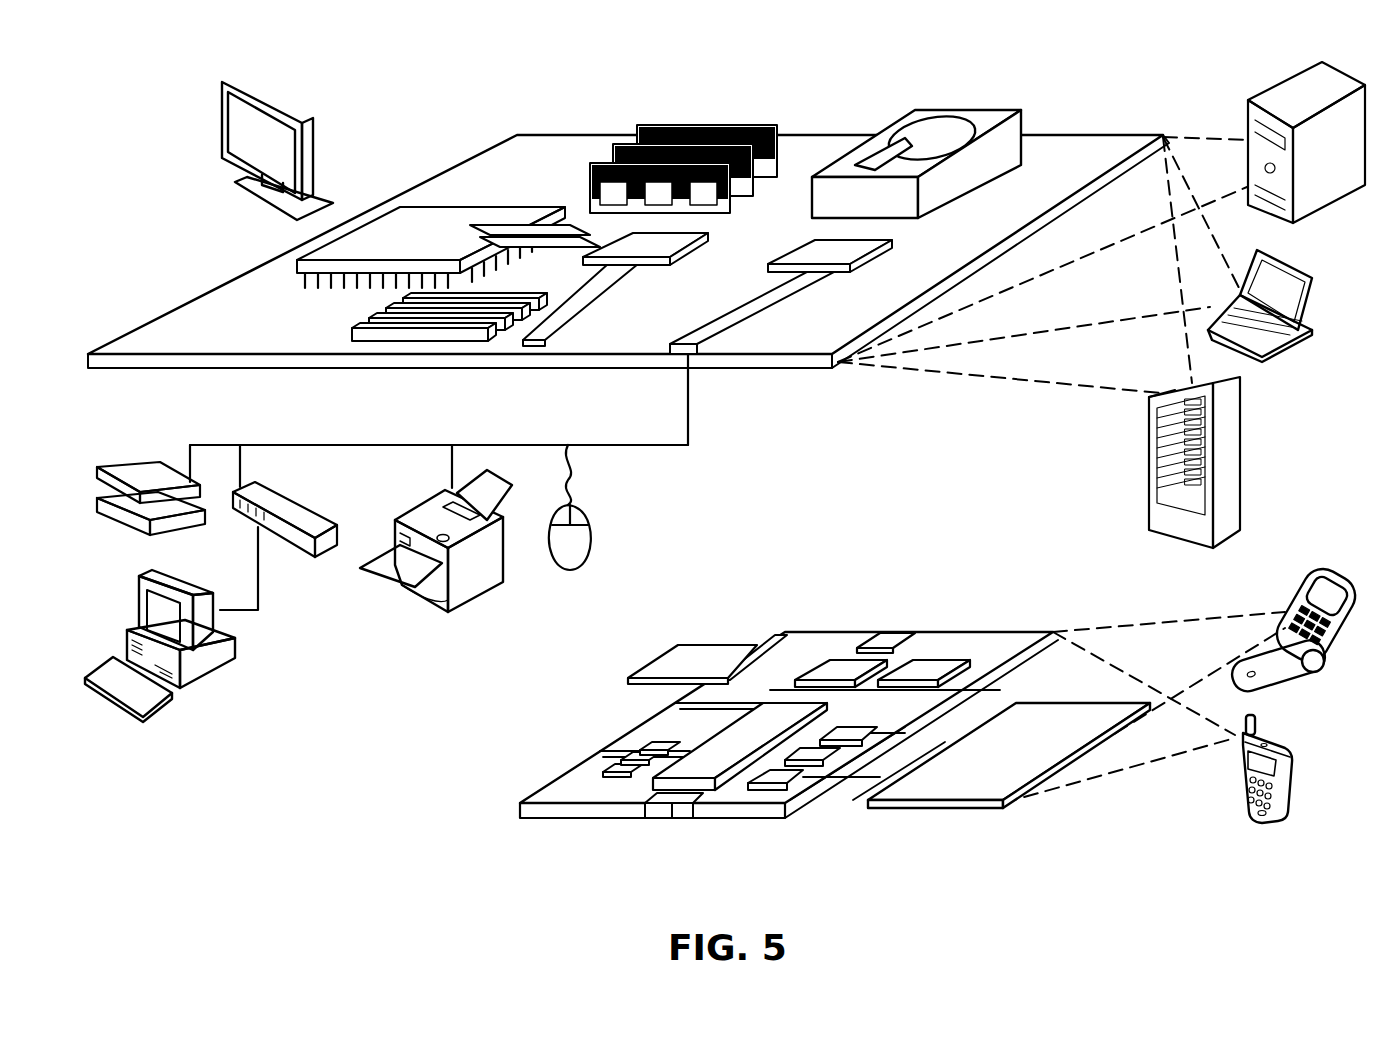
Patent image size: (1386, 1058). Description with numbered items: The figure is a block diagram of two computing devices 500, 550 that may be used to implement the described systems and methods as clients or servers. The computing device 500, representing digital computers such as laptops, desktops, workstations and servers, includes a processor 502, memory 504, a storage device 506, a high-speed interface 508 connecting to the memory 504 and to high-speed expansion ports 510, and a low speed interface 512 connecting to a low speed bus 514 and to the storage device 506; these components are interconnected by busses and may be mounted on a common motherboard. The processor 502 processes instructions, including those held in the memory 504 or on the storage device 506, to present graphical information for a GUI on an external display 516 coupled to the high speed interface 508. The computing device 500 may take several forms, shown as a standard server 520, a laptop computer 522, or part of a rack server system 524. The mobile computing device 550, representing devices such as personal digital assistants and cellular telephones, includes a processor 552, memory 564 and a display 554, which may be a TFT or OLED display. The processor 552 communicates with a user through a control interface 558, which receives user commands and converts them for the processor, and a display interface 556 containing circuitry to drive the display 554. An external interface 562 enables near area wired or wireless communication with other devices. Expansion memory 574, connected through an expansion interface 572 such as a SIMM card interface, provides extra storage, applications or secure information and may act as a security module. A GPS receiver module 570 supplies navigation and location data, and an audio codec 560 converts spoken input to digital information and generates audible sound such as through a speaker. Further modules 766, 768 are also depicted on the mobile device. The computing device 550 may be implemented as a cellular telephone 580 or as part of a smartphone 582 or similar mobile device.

The computing device 500 is at (735, 384).
The processor 502 is at (300, 262).
The memory 504 is at (650, 130).
The storage device 506 is at (908, 130).
The high-speed interface 508 is at (622, 252).
The high-speed expansion ports 510 is at (372, 326).
The low speed interface 512 is at (808, 250).
The low speed bus 514 is at (695, 354).
The display 516 is at (226, 82).
The standard server 520 is at (1250, 122).
The laptop computer 522 is at (1320, 280).
The rack server system 524 is at (1150, 490).
The computing device 550 is at (888, 728).
The processor 552 is at (712, 772).
The display 554 is at (968, 790).
The display interface 556 is at (793, 792).
The control interface 558 is at (830, 766).
The audio codec 560 is at (850, 742).
The external interface 562 is at (678, 806).
The memory 564 is at (612, 764).
The GPS receiver module 570 is at (895, 633).
The expansion interface 572 is at (765, 643).
The expansion memory 574 is at (690, 647).
The module 766 is at (840, 672).
The module 768 is at (925, 673).
The cellular telephone 580 is at (1296, 582).
The smartphone 582 is at (1240, 776).